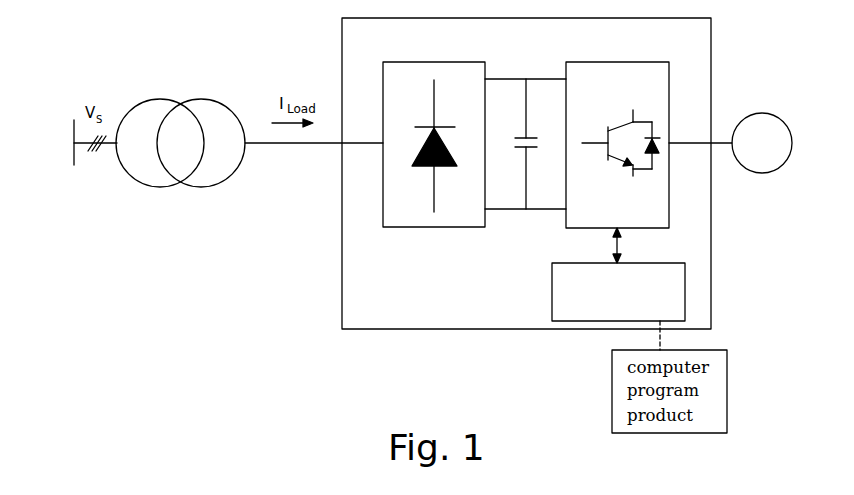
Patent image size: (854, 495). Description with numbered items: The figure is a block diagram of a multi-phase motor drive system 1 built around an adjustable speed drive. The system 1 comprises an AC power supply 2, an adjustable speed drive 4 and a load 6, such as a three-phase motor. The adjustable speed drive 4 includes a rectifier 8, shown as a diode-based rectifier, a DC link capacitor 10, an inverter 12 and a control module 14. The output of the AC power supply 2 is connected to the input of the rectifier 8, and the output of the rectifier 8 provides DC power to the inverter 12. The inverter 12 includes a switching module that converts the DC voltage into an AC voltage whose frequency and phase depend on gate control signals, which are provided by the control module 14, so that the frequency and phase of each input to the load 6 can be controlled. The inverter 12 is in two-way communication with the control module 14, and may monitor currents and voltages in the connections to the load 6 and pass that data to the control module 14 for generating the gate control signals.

The system 1 is at (326, 382).
The AC power supply 2 is at (205, 187).
The adjustable speed drive 4 is at (415, 329).
The load 6 is at (762, 173).
The rectifier 8 is at (410, 227).
The DC link capacitor 10 is at (525, 150).
The inverter 12 is at (669, 103).
The control module 14 is at (618, 321).